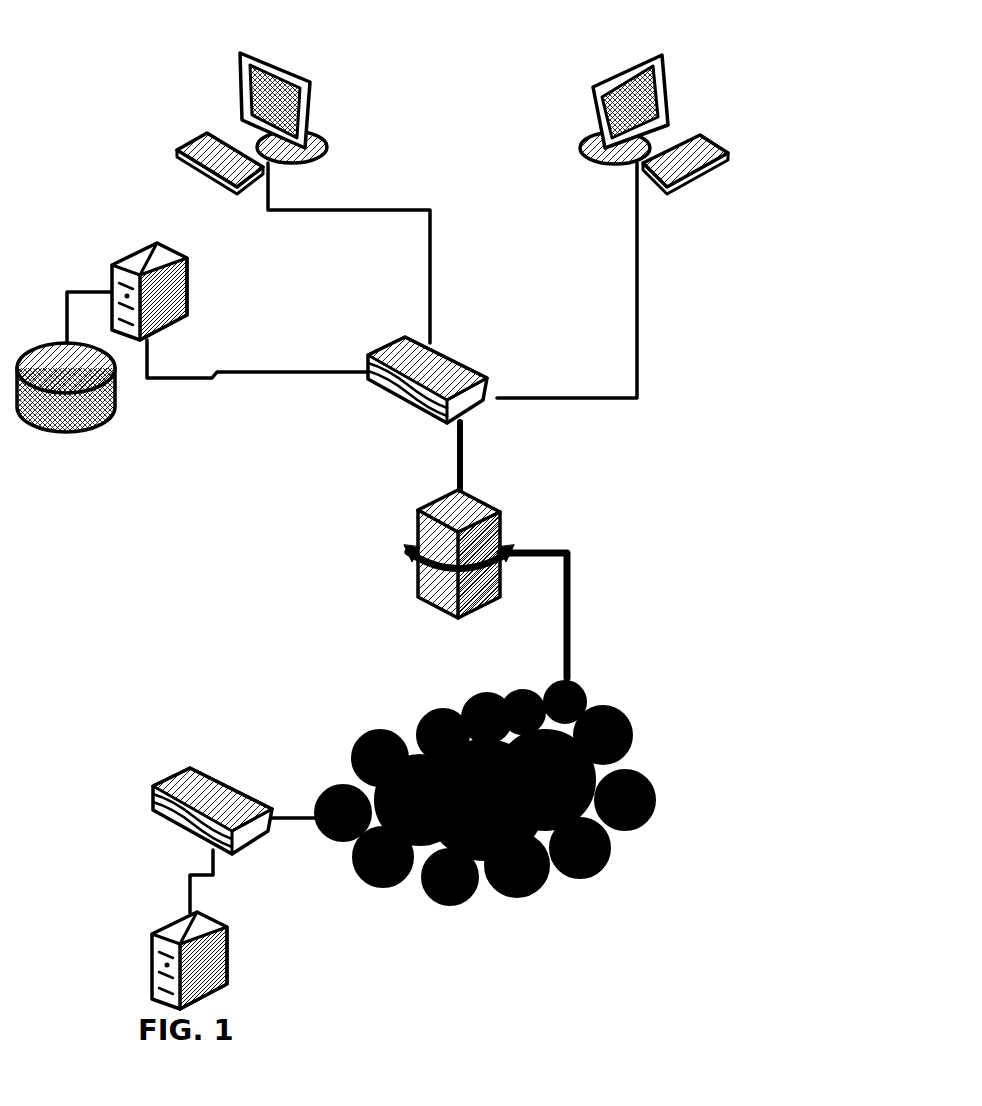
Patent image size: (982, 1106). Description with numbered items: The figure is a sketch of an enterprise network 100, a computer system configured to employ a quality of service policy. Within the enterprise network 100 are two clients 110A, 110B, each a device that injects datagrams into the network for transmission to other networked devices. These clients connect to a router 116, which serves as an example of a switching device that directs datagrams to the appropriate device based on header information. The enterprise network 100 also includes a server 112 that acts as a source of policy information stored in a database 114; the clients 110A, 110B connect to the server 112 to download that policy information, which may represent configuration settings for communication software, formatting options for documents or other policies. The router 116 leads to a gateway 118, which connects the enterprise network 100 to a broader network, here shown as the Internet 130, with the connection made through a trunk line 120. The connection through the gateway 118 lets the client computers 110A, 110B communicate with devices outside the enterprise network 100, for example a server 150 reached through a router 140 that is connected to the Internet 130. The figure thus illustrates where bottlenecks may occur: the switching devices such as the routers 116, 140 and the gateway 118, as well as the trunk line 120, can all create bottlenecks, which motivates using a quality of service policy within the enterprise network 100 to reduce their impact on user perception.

The enterprise network 100 is at (788, 90).
The client 110A is at (248, 50).
The client 110B is at (652, 52).
The server 112 is at (192, 273).
The database 114 is at (115, 441).
The router 116 is at (450, 353).
The gateway 118 is at (497, 510).
The trunk line 120 is at (572, 597).
The Internet 130 is at (647, 768).
The router 140 is at (175, 781).
The server 150 is at (177, 923).